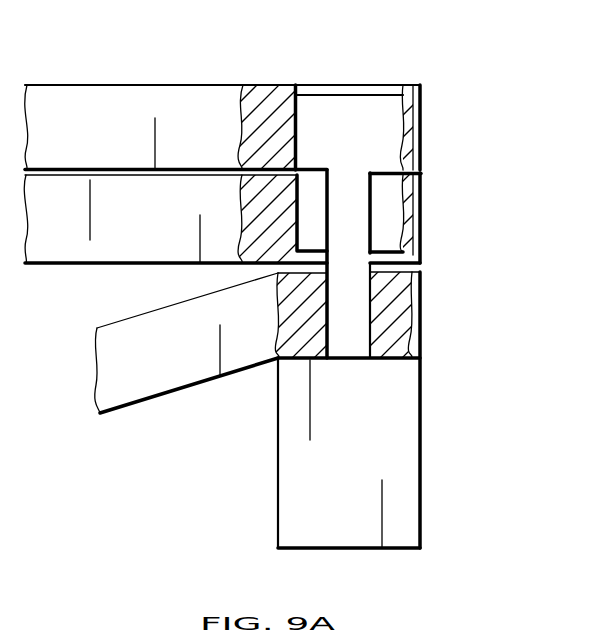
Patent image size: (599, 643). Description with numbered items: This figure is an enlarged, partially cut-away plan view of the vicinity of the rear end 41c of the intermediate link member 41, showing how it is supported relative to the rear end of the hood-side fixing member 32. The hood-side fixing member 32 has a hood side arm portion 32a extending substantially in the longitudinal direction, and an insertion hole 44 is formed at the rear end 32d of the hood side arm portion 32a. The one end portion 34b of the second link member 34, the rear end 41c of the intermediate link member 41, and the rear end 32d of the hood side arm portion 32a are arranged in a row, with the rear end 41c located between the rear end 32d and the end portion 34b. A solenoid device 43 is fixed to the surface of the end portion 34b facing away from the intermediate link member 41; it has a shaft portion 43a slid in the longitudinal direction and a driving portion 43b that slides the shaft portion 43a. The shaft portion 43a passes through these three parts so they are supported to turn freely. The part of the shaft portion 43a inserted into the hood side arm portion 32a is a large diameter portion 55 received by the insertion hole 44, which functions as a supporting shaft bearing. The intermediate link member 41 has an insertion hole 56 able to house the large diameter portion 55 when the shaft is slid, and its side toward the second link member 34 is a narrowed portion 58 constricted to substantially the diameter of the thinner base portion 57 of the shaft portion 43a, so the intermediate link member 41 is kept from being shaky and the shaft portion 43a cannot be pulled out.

The hood-side fixing member 32 is at (93, 78).
The hood side arm portion 32a is at (186, 100).
The insertion hole 44 is at (284, 107).
The rear end of the hood side arm portion 32d is at (414, 96).
The large diameter portion 55 is at (387, 130).
The intermediate link member 41 is at (49, 272).
The rear end of the intermediate link member 41c is at (425, 197).
The shaft portion 43a is at (408, 216).
The insertion hole 56 is at (390, 243).
The narrowed portion 58 is at (400, 270).
The base portion 57 is at (358, 305).
The one end portion of the second link member 34b is at (414, 336).
The second link member 34 is at (187, 393).
The solenoid device 43 is at (398, 403).
The driving portion 43b is at (403, 475).